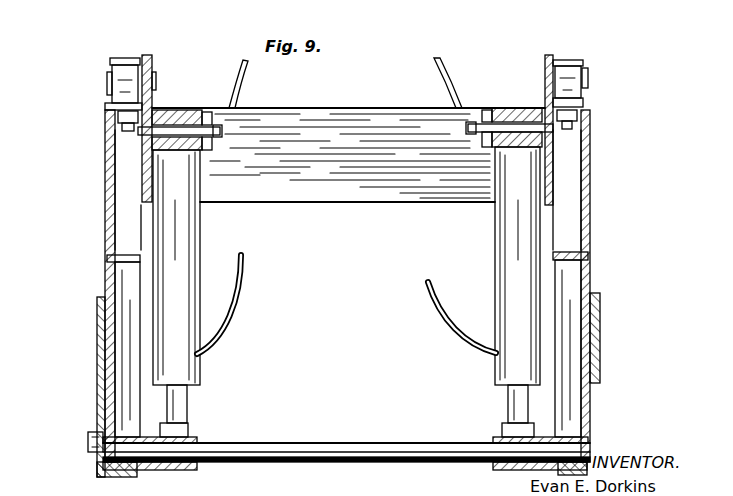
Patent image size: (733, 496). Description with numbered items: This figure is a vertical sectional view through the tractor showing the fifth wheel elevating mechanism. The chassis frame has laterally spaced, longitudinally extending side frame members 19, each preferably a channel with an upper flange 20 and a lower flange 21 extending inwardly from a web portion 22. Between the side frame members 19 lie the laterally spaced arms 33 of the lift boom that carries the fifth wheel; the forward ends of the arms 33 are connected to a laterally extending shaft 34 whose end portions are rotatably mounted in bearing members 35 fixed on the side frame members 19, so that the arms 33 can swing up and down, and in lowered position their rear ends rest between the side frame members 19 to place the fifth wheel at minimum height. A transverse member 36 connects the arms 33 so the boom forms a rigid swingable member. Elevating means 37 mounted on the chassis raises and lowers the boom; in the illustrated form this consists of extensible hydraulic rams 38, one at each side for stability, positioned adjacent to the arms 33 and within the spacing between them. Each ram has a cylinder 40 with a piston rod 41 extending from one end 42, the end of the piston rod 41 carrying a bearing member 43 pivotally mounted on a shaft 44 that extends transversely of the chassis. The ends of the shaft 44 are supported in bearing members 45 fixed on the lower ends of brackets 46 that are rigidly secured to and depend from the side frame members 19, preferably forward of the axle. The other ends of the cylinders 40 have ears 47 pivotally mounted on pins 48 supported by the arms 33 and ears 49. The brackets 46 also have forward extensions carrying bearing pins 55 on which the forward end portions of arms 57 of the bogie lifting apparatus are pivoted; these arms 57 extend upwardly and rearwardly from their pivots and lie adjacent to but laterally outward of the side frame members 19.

The side frame member 19 is at (590, 138).
The upper flange 20 is at (562, 104).
The lower flange 21 is at (570, 250).
The web portion 22 is at (590, 182).
The arm 33 is at (152, 100).
The shaft 34 is at (588, 77).
The bearing member 35 is at (570, 58).
The transverse member 36 is at (374, 195).
The elevating means 37 is at (200, 237).
The hydraulic ram 38 is at (497, 287).
The cylinder 40 is at (497, 230).
The piston rod 41 is at (508, 405).
The cylinder end 42 is at (497, 388).
The bearing member 43 is at (495, 466).
The shaft 44 is at (298, 442).
The bearing member 45 is at (590, 440).
The bracket 46 is at (590, 280).
The ear 47 is at (508, 110).
The pin 48 is at (466, 128).
The ear 49 is at (488, 110).
The bearing pin 55 is at (88, 441).
The arm 57 is at (97, 308).